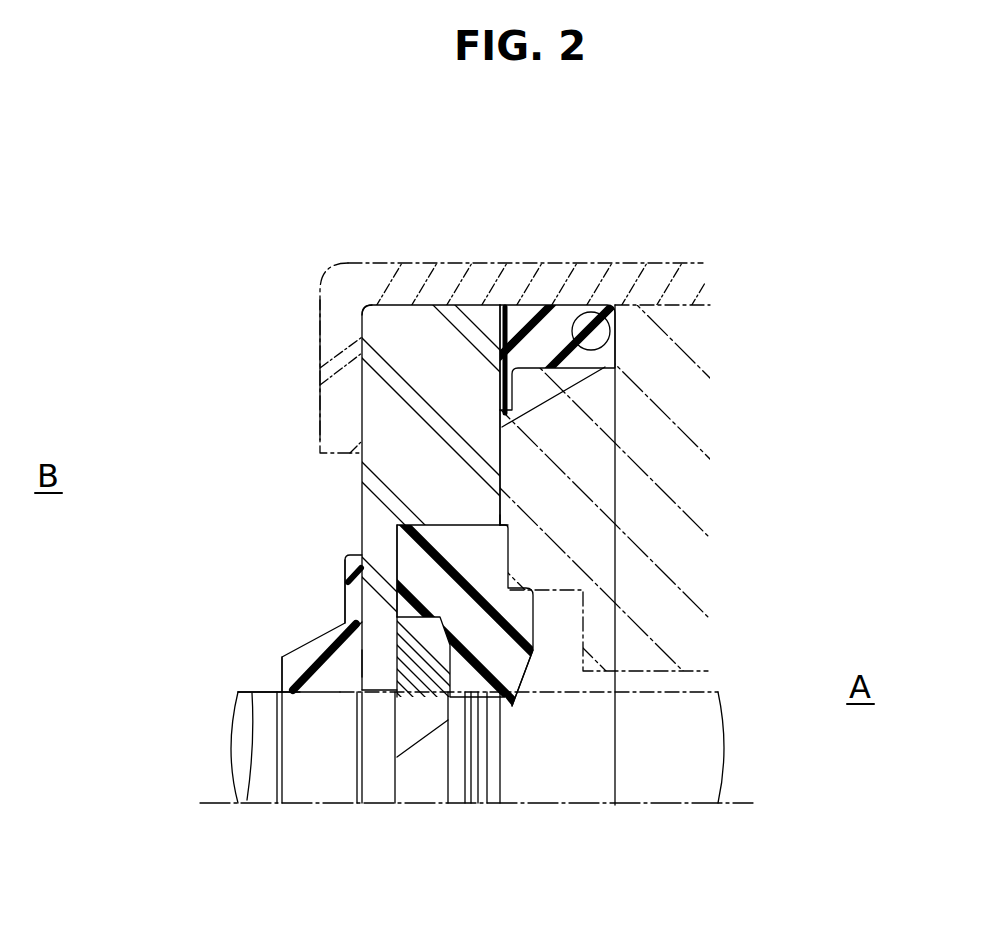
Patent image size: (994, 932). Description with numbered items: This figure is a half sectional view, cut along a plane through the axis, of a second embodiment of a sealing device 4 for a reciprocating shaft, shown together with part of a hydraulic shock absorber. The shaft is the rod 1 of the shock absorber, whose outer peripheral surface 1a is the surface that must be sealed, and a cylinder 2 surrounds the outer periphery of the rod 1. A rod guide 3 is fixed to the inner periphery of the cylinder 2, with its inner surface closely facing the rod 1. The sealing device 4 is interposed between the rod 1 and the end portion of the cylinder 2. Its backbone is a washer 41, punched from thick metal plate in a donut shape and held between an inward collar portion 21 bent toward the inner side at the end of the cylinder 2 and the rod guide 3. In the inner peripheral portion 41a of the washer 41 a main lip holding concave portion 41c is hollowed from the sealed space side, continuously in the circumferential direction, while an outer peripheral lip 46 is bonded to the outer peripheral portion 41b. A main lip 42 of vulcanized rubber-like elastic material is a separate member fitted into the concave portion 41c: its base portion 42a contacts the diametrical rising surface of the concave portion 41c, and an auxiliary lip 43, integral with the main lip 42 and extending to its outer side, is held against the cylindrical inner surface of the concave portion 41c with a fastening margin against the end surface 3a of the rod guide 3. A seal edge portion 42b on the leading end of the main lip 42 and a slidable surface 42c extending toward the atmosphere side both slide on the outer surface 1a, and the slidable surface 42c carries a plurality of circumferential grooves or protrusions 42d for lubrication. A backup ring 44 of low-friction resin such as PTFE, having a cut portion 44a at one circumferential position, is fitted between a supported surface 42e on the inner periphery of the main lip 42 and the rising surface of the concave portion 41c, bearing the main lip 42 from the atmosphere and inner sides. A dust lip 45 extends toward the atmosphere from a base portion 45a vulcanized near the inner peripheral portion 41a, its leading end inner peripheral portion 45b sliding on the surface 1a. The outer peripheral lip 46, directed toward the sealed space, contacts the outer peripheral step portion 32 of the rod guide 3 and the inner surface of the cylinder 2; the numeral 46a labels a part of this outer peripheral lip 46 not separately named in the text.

The rod 1 is at (232, 737).
The outer peripheral surface of the rod 1a is at (260, 691).
The cylinder 2 is at (683, 277).
The rod guide 3 is at (683, 420).
The end surface of the rod guide 3a is at (498, 500).
The sealing device 4 is at (343, 475).
The inward collar portion 21 is at (338, 397).
The outer peripheral step portion 32 is at (577, 308).
The washer 41 is at (435, 355).
The inner peripheral portion of the washer 41a is at (283, 652).
The outer peripheral portion of the washer 41b is at (397, 330).
The main lip holding concave portion 41c is at (508, 572).
The main lip 42 is at (538, 642).
The base portion of the main lip 42a is at (396, 572).
The seal edge portion 42b is at (493, 698).
The slidable surface 42c is at (497, 753).
The grooves or protrusions 42d is at (472, 760).
The supported surface 42e is at (397, 690).
The auxiliary lip 43 is at (507, 533).
The backup ring 44 is at (402, 680).
The cut portion 44a is at (420, 745).
The dust lip 45 is at (280, 660).
The base portion of the dust lip 45a is at (347, 637).
The inner peripheral portion of the dust lip leading end 45b is at (302, 700).
The outer peripheral lip 46 is at (553, 336).
The cylindrical portion of reinforcing ring 46a is at (500, 322).